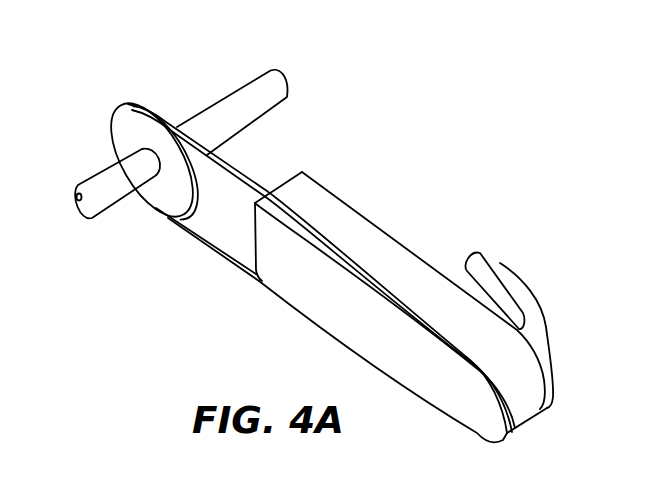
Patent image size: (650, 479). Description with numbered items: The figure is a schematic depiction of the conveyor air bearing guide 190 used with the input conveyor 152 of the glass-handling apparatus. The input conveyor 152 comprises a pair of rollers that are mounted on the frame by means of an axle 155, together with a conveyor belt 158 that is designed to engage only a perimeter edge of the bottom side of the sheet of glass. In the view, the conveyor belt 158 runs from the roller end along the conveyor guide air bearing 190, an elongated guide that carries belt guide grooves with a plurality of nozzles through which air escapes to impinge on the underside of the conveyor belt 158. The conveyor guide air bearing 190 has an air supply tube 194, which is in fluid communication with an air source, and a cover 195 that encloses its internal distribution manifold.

The input conveyor 152 is at (123, 128).
The axle 155 is at (284, 76).
The conveyor belt 158 is at (168, 121).
The conveyor guide air bearing 190 is at (440, 287).
The air supply tube 194 is at (500, 263).
The cover 195 is at (284, 266).